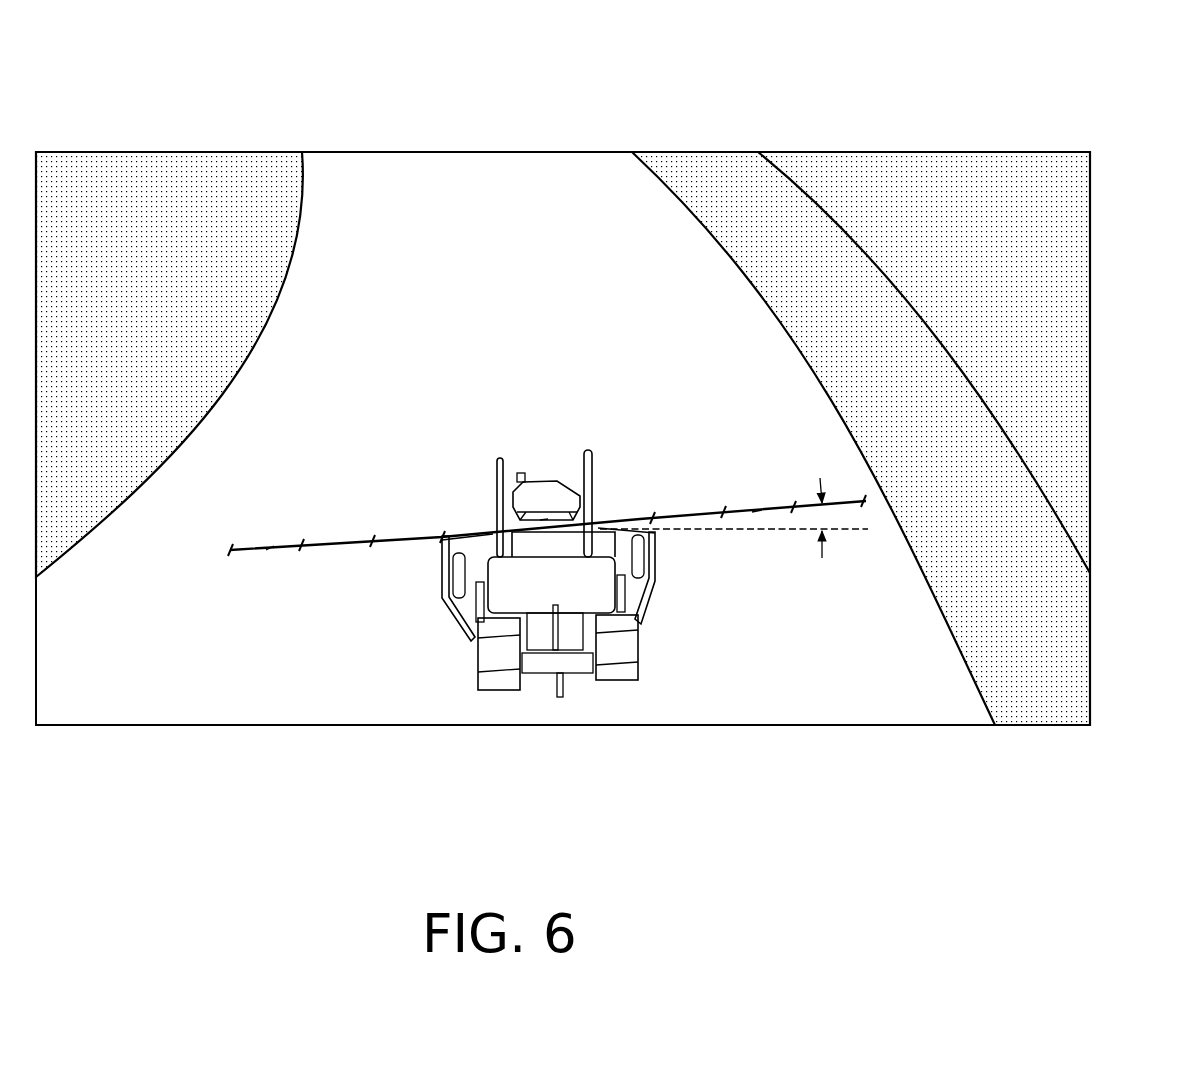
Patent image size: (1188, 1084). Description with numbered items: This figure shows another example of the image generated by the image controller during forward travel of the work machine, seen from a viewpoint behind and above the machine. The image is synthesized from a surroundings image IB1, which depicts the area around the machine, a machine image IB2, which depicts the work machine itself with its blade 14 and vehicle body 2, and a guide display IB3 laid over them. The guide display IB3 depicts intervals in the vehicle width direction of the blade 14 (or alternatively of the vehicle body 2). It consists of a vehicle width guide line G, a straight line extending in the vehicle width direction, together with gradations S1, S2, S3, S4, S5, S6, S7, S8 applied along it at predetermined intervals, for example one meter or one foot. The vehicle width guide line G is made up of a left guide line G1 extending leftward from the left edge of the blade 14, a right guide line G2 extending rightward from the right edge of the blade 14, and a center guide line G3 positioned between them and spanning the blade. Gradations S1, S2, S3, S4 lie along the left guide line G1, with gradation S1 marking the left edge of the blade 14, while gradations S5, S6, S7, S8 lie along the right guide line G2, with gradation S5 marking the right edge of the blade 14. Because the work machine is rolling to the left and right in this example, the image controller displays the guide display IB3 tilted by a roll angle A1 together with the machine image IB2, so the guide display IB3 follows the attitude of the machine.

The left guide line G1 is at (270, 547).
The vehicle width guide line G is at (355, 515).
The gradation S1 is at (442, 537).
The center guide line G3 is at (542, 519).
The gradation S5 is at (652, 517).
The right guide line G2 is at (760, 510).
The surroundings image IB1 is at (535, 270).
The guide display IB3 is at (884, 502).
The gradation S4 is at (230, 553).
The gradation S3 is at (301, 550).
The gradation S2 is at (372, 547).
The blade 14 is at (443, 563).
The machine image IB2 is at (534, 702).
The vehicle body 2 is at (568, 603).
The gradation S6 is at (723, 517).
The gradation S7 is at (793, 512).
The roll angle A1 is at (846, 527).
The gradation S8 is at (863, 503).